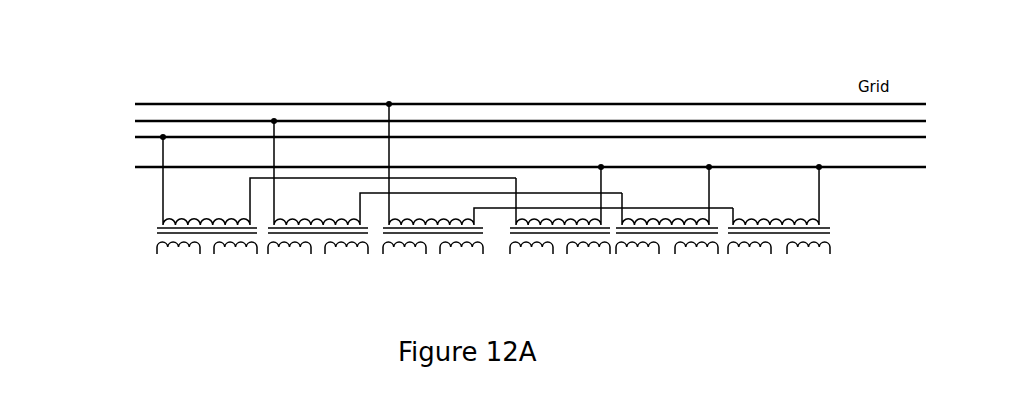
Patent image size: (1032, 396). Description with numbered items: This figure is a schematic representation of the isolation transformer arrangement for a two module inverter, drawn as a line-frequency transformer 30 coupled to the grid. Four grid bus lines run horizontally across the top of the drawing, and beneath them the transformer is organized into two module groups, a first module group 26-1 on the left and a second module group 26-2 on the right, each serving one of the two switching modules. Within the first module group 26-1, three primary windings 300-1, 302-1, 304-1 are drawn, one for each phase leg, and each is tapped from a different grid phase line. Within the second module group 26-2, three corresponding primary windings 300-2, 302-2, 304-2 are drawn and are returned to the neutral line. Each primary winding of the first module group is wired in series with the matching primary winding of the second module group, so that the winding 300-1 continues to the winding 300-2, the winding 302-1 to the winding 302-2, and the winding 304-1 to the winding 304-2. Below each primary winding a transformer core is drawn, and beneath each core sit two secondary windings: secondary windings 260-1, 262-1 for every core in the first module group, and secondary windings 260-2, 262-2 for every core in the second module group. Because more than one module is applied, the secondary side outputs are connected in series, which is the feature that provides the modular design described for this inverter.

The line-frequency transformer 30 is at (115, 32).
The module #1 26-1 is at (145, 264).
The module #2 26-2 is at (855, 240).
The transformer (phase A, module 1) 300-1 is at (336, 185).
The transformer (phase B, module 1) 302-1 is at (445, 177).
The transformer (phase C, module 1) 304-1 is at (558, 168).
The transformer (phase A, module 2) 300-2 is at (588, 178).
The transformer (phase B, module 2) 302-2 is at (690, 178).
The transformer (phase C, module 2) 304-2 is at (802, 178).
The secondary winding (module 1) 260-1 is at (291, 257).
The secondary winding (module 1) 262-1 is at (348, 257).
The secondary winding (module 2) 260-2 is at (745, 283).
The secondary winding (module 2) 262-2 is at (815, 285).